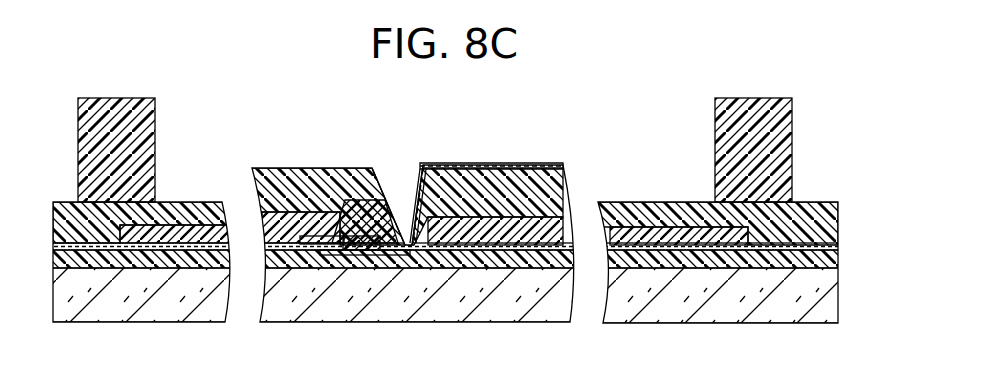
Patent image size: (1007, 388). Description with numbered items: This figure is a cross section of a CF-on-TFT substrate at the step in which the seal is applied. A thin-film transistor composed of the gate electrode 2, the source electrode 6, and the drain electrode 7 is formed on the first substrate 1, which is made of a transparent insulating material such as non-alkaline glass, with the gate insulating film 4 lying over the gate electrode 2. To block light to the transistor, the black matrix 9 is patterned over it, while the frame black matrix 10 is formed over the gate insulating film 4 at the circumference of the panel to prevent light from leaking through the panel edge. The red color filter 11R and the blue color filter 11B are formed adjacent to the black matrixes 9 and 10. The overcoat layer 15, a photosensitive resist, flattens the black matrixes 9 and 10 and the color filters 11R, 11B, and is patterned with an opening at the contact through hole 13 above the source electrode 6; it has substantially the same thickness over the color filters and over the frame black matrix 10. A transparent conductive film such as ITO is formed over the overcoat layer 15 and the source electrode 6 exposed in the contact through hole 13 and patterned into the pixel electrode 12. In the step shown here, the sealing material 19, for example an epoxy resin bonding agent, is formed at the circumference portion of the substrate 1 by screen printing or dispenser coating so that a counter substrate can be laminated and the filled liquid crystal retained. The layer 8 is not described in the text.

The first substrate 1 is at (724, 298).
The gate electrode 2 is at (372, 265).
The gate insulating film 4 is at (823, 262).
The source electrode 6 is at (397, 270).
The drain electrode 7 is at (300, 262).
The passivation film 8 is at (826, 246).
The black matrix 9 is at (353, 195).
The frame black matrix 10 is at (184, 236).
The blue color filter 11B is at (278, 215).
The red color filter 11R is at (518, 230).
The pixel electrode 12 is at (461, 165).
The contact through hole 13 is at (410, 200).
The overcoat layer 15 is at (191, 222).
The sealing material 19 is at (143, 119).